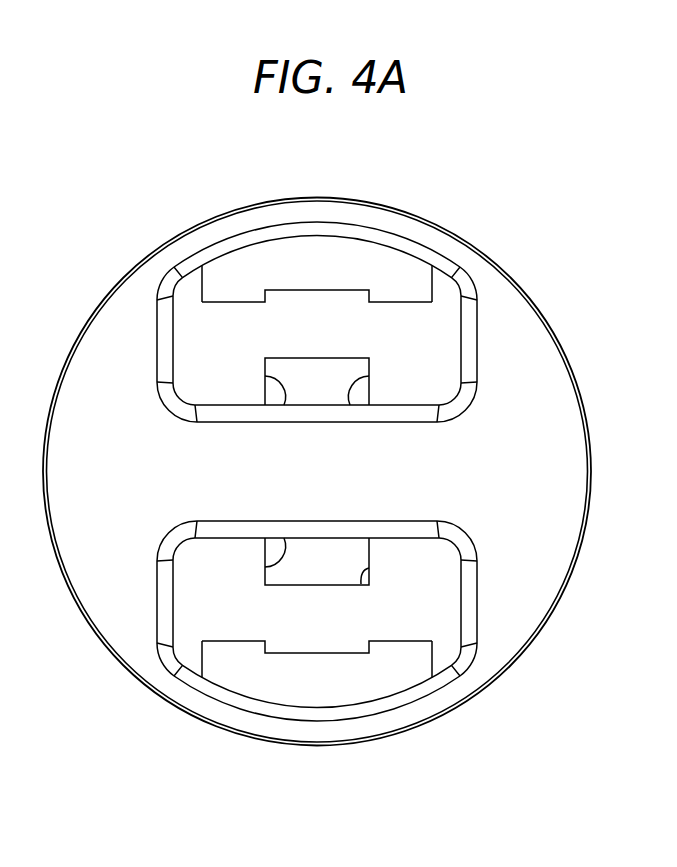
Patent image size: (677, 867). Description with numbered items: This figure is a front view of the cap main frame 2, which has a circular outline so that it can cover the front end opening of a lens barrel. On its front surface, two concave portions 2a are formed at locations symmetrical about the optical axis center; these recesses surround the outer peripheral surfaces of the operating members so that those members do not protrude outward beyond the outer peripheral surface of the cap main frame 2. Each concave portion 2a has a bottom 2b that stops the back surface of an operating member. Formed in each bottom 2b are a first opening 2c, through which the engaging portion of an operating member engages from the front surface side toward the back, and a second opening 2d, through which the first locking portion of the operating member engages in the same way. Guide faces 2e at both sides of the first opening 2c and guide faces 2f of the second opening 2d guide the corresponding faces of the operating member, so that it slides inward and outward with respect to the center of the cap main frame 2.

The cap main frame 2 is at (513, 273).
The concave portion 2a is at (448, 338).
The bottom 2b is at (322, 308).
The first opening 2c is at (312, 252).
The second opening 2d is at (317, 377).
The guide face 2e is at (206, 281).
The guide face 2f is at (286, 397).